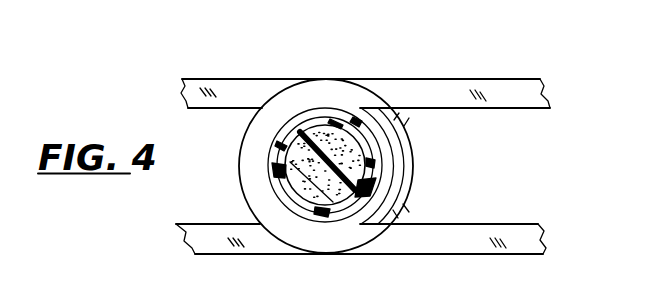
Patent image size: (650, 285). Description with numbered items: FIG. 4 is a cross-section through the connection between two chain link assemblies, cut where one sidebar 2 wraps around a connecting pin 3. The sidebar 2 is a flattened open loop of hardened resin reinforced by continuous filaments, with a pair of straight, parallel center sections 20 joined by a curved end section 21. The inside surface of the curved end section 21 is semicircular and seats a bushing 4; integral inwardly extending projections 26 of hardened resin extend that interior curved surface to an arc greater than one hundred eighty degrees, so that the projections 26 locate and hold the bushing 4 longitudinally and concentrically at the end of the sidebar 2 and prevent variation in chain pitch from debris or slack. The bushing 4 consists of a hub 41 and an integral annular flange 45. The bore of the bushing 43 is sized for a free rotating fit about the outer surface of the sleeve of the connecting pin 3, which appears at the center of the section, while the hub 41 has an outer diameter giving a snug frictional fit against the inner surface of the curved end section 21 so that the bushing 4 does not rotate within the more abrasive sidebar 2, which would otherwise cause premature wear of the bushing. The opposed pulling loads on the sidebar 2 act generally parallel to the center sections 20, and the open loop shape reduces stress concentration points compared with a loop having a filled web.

The sidebar 2 is at (222, 78).
The center section 20 is at (540, 108).
The connecting pin 3 is at (365, 160).
The bushing 4 is at (410, 135).
The curved end section 21 is at (275, 180).
The inwardly extending projection 26 is at (395, 118).
The hub 41 is at (405, 197).
The bore of the bushing 43 is at (283, 144).
The annular flange 45 is at (403, 177).